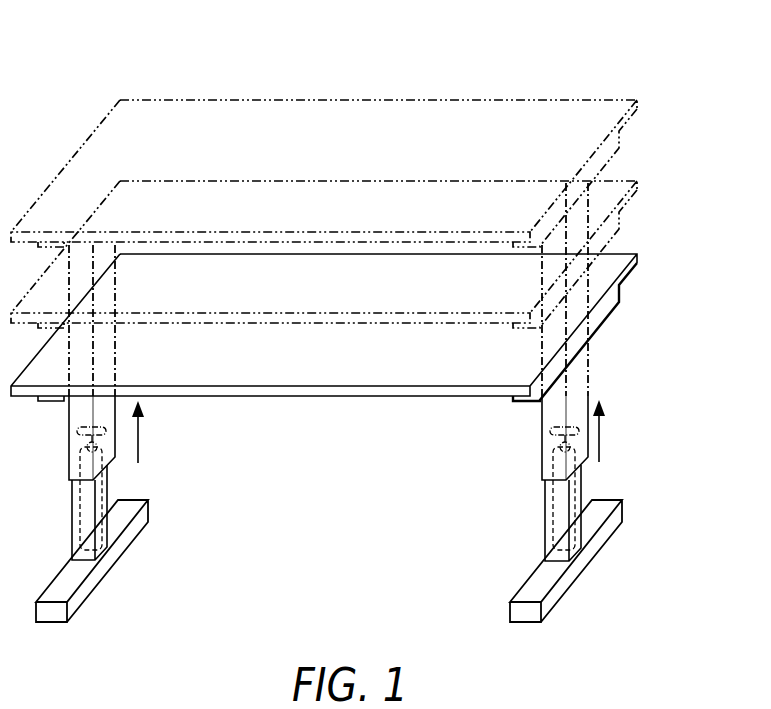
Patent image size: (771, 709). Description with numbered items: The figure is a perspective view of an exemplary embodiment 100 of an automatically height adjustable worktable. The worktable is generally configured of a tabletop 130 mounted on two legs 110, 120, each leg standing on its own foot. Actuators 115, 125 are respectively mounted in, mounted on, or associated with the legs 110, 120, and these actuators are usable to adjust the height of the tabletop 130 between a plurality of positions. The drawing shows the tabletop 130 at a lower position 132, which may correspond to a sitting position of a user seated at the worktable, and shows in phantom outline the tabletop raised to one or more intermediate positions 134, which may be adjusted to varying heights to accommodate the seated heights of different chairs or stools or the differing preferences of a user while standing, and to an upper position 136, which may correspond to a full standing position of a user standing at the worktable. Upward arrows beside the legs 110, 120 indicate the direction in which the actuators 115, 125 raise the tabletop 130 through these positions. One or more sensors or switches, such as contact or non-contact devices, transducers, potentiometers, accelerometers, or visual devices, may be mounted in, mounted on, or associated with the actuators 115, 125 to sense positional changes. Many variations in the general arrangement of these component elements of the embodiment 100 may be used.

The automatically height adjustable worktable 100 is at (256, 63).
The leg 110 is at (126, 557).
The actuator 115 is at (104, 490).
The leg 120 is at (599, 557).
The actuator 125 is at (577, 490).
The tabletop 130 is at (307, 400).
The lower position 132 is at (639, 263).
The intermediate position 134 is at (639, 190).
The upper position 136 is at (639, 108).